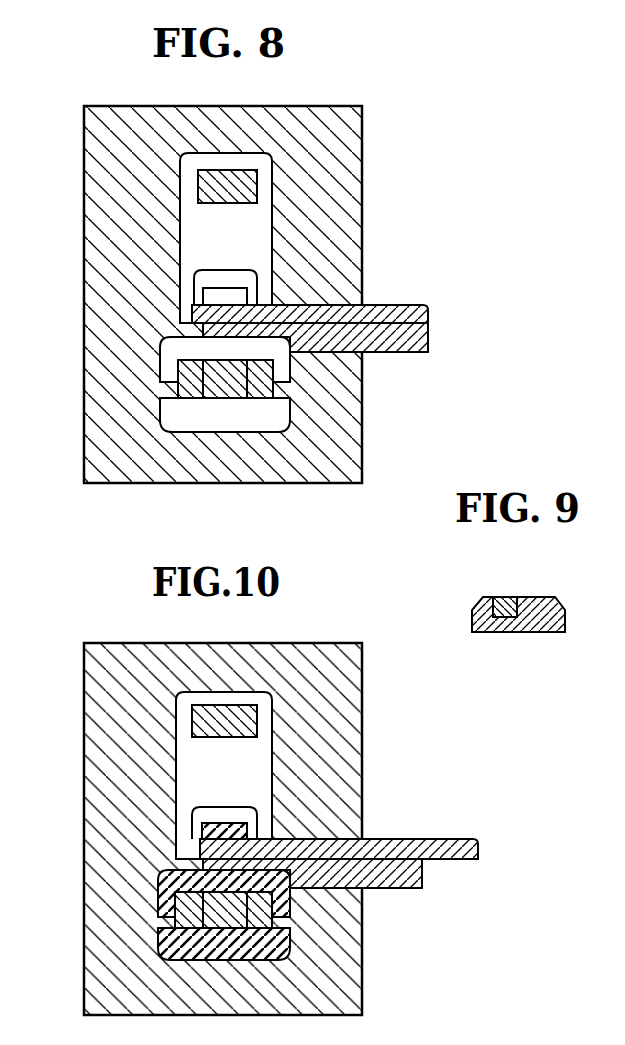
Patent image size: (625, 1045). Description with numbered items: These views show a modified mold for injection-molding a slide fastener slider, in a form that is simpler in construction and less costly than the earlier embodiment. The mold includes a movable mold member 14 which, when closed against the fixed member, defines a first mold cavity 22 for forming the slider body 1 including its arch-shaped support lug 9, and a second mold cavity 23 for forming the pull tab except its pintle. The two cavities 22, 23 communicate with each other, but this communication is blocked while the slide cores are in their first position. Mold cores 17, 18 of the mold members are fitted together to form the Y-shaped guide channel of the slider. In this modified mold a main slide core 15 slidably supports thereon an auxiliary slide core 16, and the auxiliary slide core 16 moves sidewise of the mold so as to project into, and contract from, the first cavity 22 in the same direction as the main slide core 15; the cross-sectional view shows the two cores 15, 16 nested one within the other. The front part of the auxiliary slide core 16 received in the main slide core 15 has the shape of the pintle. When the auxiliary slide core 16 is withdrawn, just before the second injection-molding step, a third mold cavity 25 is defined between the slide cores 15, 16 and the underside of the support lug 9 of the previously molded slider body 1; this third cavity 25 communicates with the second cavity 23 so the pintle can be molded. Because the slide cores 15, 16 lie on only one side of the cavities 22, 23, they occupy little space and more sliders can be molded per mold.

In FIG. 10, the slider body 1 is at (263, 947).
In FIG. 8, the support lug 9 is at (213, 290).
In FIG. 10, the support lug 9 is at (212, 823).
In FIG. 8, the movable mold member 14 is at (343, 146).
In FIG. 10, the movable mold member 14 is at (348, 690).
In FIG. 8, the main slide core 15 is at (413, 353).
In FIG. 9, the main slide core 15 is at (540, 605).
In FIG. 10, the main slide core 15 is at (405, 880).
In FIG. 8, the auxiliary slide core 16 is at (396, 312).
In FIG. 9, the auxiliary slide core 16 is at (503, 597).
In FIG. 10, the auxiliary slide core 16 is at (448, 845).
In FIG. 8, the mold core 17 is at (267, 390).
In FIG. 8, the mold core 18 is at (227, 395).
In FIG. 8, the first mold cavity 22 is at (265, 418).
In FIG. 8, the second mold cavity 23 is at (262, 226).
In FIG. 10, the second mold cavity 23 is at (262, 762).
In FIG. 10, the third mold cavity 25 is at (203, 846).